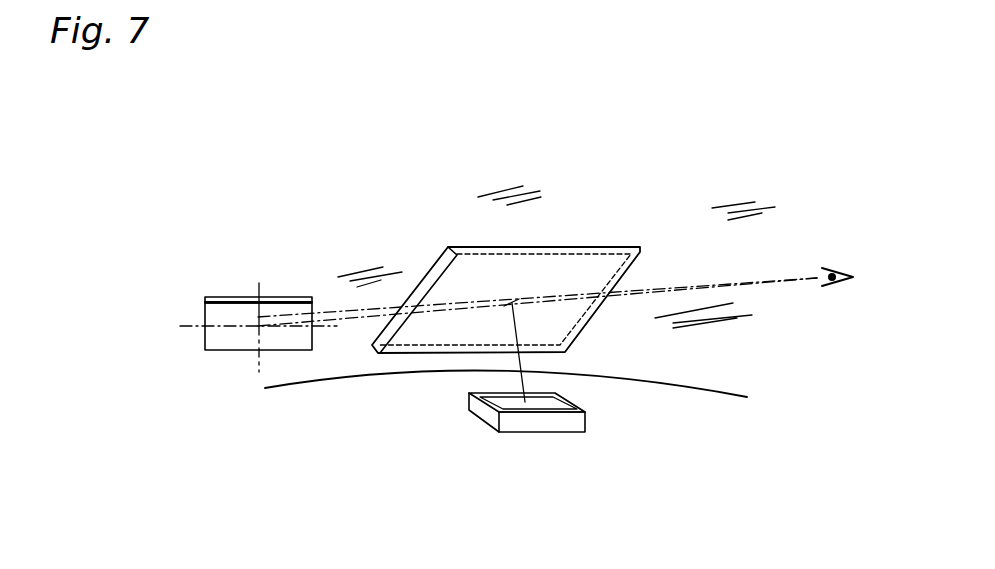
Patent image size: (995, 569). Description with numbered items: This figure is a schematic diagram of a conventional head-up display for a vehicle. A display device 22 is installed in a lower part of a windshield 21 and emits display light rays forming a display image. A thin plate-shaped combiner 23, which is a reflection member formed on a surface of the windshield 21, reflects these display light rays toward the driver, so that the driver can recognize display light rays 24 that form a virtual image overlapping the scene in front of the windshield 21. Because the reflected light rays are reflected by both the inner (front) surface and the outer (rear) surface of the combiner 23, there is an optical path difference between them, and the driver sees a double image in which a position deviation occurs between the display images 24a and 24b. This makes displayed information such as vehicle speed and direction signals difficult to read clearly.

The windshield 21 is at (688, 251).
The display device 22 is at (543, 432).
The combiner 23 is at (578, 273).
The display light rays 24 is at (133, 253).
The display image 24a is at (228, 347).
The display image 24b is at (227, 297).